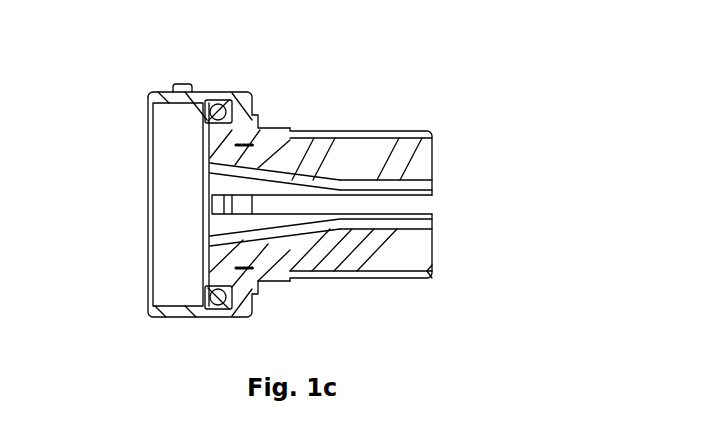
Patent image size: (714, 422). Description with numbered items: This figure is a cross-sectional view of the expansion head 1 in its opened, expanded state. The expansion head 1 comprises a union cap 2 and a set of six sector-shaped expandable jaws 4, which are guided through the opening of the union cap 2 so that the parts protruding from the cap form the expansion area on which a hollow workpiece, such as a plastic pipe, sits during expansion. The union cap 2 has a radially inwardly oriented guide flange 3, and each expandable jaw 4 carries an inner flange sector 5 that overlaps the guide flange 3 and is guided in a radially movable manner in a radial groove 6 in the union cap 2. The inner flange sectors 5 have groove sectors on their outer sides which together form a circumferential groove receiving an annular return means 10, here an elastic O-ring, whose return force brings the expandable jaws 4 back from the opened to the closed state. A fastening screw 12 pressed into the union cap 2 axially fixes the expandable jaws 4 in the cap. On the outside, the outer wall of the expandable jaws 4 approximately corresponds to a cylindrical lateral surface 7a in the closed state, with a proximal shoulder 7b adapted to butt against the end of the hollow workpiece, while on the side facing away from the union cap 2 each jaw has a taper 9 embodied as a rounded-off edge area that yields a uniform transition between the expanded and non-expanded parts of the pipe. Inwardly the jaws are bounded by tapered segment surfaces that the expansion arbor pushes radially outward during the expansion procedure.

The expansion head 1 is at (455, 90).
The union cap 2 is at (148, 96).
The guide flange 3 is at (253, 107).
The expandable jaws 4 is at (418, 243).
The inner flange sector 5 is at (231, 290).
The radial groove 6 is at (222, 105).
The cylindrical lateral surface 7a is at (420, 130).
The proximal shoulder 7b is at (289, 126).
The taper 9 is at (431, 274).
The return means 10 is at (217, 288).
The fastening screw 12 is at (203, 150).